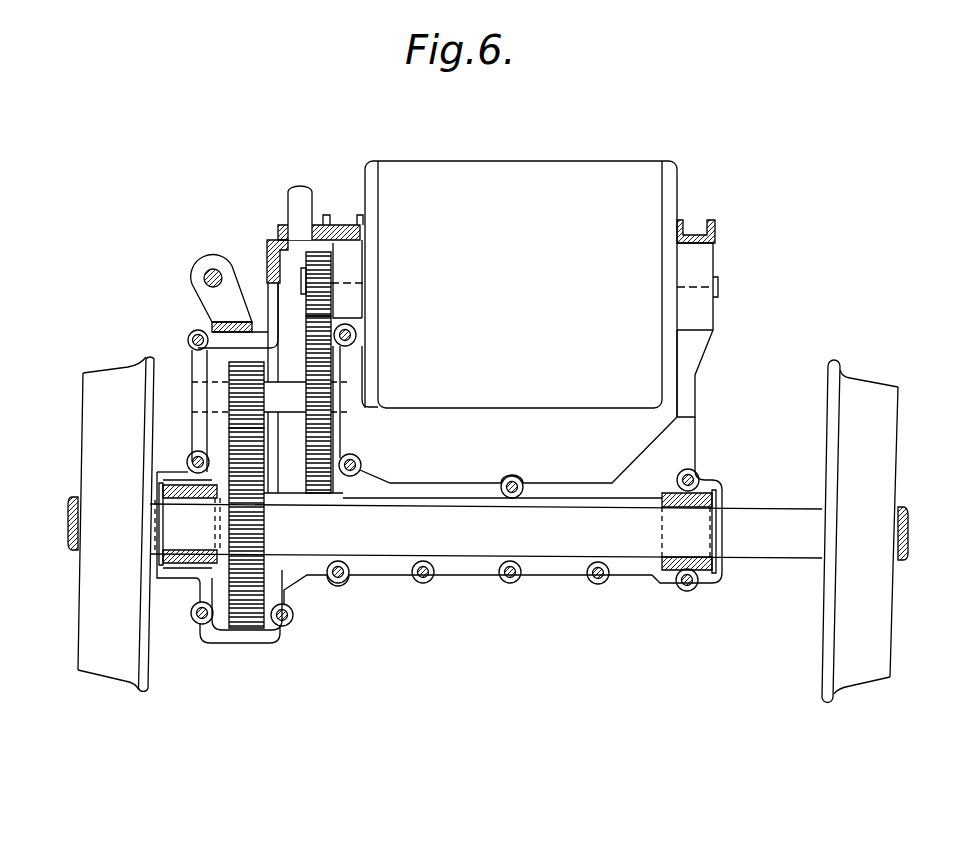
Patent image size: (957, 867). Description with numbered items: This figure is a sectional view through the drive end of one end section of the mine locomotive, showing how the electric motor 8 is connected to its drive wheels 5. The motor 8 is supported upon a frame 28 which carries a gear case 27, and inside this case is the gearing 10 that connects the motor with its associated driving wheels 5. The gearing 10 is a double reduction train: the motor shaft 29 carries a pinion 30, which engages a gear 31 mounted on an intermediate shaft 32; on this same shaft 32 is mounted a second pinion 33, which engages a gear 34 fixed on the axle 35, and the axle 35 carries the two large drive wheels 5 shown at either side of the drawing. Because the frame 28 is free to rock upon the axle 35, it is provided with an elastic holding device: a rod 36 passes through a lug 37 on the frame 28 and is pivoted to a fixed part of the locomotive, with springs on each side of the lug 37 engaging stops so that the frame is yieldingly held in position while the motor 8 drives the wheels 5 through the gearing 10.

The drive wheels 5 is at (85, 607).
The electric motor 8 is at (550, 170).
The gearing 10 is at (282, 366).
The gear case 27 is at (290, 292).
The frame 28 is at (697, 350).
The motor shaft 29 is at (333, 270).
The pinion 30 is at (333, 301).
The gear 31 is at (333, 375).
The shaft 32 is at (285, 403).
The pinion 33 is at (250, 372).
The gear 34 is at (247, 528).
The axle 35 is at (486, 531).
The rod 36 is at (203, 272).
The lug 37 is at (208, 292).